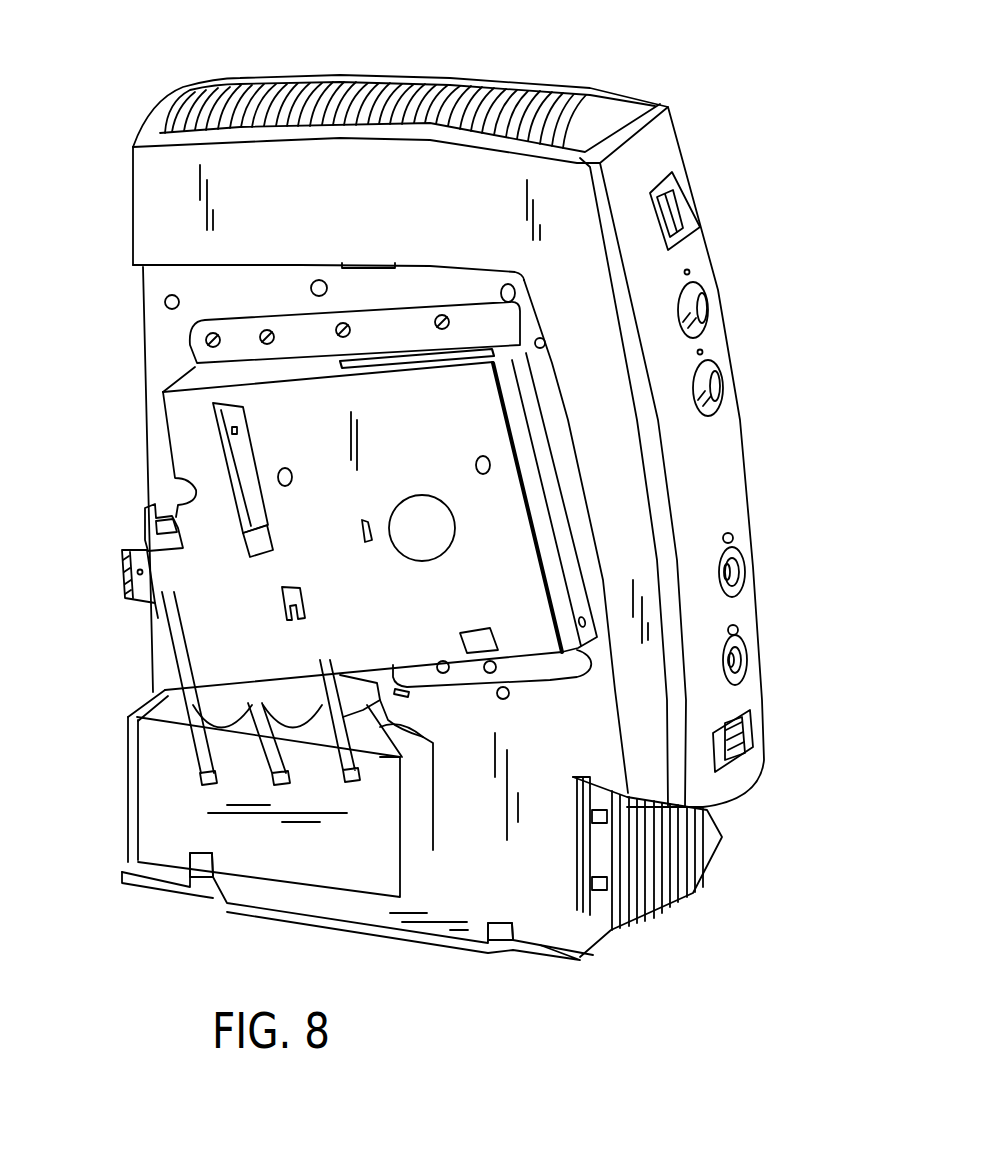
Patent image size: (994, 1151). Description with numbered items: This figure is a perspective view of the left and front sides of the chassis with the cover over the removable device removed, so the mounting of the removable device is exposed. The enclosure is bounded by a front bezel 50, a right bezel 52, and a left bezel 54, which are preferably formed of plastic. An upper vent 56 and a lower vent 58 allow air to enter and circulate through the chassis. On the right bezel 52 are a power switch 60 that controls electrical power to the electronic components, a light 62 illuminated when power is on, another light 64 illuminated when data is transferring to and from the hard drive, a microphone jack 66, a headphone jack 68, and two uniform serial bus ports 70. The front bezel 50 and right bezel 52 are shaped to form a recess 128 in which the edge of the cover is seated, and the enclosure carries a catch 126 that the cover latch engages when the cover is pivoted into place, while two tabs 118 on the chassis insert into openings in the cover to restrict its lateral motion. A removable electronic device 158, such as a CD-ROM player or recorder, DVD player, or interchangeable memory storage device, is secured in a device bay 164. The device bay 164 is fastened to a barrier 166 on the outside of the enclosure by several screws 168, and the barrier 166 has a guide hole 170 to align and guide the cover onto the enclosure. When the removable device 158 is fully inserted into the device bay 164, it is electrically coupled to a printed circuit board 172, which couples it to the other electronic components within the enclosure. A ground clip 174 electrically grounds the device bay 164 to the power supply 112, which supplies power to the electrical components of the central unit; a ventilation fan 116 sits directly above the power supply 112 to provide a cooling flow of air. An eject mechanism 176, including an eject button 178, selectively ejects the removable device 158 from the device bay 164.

The front bezel 50 is at (672, 126).
The right bezel 52 is at (591, 88).
The left bezel 54 is at (133, 190).
The upper vent 56 is at (402, 95).
The lower vent 58 is at (700, 893).
The power switch 60 is at (678, 204).
The light 62 is at (707, 302).
The light 64 is at (720, 387).
The microphone jack 66 is at (740, 572).
The headphone jack 68 is at (742, 660).
The uniform serial bus (USB) ports 70 is at (750, 723).
The power supply 112 is at (150, 777).
The ventilation fan 116 is at (355, 732).
The tabs 118 is at (215, 880).
The catch 126 is at (373, 263).
The recess 128 is at (290, 260).
The removable electronic device 158 is at (532, 402).
The device bay 164 is at (525, 640).
The barrier 166 is at (163, 340).
The screws 168 is at (210, 337).
The guide hole 170 is at (173, 293).
The printed circuit board 172 is at (240, 468).
The ground clip 174 is at (205, 785).
The eject mechanism 176 is at (126, 524).
The eject button 178 is at (120, 566).